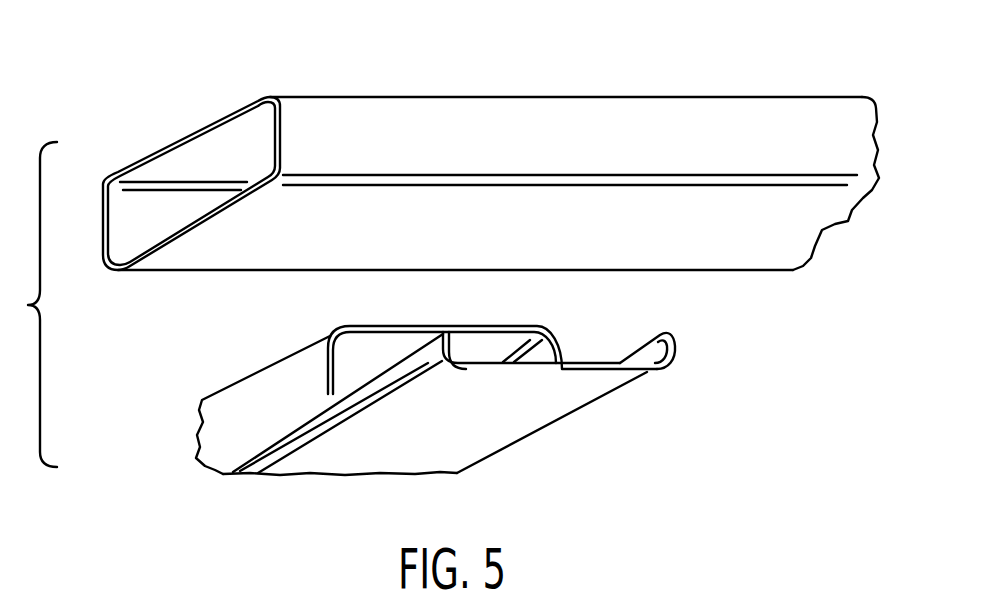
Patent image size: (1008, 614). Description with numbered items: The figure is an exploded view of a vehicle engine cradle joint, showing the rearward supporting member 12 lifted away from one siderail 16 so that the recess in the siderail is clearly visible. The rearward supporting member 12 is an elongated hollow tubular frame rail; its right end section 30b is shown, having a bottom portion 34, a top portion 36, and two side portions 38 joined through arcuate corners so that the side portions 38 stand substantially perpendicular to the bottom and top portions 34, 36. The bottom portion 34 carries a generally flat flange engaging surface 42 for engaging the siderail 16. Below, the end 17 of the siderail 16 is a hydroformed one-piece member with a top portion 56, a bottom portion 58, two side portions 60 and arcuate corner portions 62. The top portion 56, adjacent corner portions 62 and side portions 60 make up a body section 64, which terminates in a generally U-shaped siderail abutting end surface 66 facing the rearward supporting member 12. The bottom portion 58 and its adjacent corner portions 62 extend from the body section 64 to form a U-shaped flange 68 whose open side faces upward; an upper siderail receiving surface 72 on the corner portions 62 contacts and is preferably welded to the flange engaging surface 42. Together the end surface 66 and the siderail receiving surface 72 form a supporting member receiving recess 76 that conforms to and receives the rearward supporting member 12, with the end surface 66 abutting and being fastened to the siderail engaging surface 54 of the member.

The rearward supporting member 12 is at (390, 96).
The siderail 16 is at (509, 445).
The end of siderail 17 is at (160, 432).
The right end section 30b is at (586, 76).
The bottom portion 34 is at (780, 240).
The top portion 36 is at (180, 137).
The side portion 38 is at (120, 212).
The flange engaging surface 42 is at (598, 240).
The siderail engaging surface 54 is at (102, 232).
The top portion 56 is at (388, 326).
The bottom portion 58 is at (363, 462).
The side portion 60 is at (563, 353).
The arcuate corner portion 62 is at (277, 452).
The body section 64 is at (232, 388).
The siderail abutting end surface 66 is at (426, 326).
The flange 68 is at (587, 407).
The siderail receiving surface 72 is at (657, 333).
The supporting member receiving recess 76 is at (489, 348).